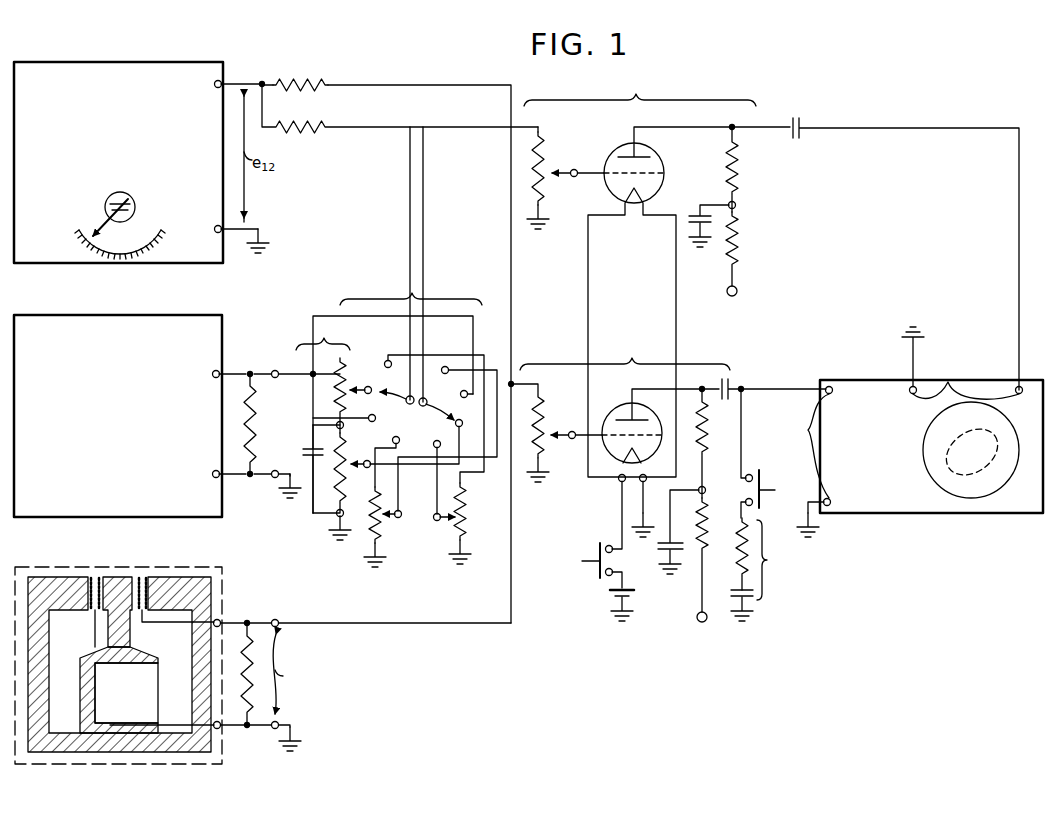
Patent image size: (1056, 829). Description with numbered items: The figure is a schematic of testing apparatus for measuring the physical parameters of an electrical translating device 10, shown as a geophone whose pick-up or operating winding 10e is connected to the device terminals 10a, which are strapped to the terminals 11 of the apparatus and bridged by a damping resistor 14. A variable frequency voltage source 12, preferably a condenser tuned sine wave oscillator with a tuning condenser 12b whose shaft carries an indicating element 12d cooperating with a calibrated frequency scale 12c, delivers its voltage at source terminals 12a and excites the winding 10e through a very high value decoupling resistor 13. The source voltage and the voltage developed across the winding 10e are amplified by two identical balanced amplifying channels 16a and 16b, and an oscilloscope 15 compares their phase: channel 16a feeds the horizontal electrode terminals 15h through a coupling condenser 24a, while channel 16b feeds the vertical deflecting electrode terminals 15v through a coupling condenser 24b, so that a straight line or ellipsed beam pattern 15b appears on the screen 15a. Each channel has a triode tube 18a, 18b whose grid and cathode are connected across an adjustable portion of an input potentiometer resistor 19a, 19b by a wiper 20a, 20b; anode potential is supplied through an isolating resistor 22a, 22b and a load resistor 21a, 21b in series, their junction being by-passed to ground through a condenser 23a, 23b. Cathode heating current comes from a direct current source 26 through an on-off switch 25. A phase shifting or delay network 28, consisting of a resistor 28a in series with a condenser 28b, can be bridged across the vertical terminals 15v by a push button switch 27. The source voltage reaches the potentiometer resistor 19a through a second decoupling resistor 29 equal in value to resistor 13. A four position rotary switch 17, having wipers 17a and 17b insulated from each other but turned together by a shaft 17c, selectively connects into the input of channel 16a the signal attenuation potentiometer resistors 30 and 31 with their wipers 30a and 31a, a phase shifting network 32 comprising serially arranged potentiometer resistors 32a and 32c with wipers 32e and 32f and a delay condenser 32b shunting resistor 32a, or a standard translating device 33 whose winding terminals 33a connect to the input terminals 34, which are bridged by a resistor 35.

The translating device 10 is at (78, 570).
The terminals of the translating device 10a is at (220, 620).
The pick-up or operating winding 10e is at (144, 576).
The terminals of the testing apparatus 11 is at (278, 620).
The variable frequency voltage source 12 is at (58, 66).
The source terminals 12a is at (217, 78).
The tuning condenser 12b is at (132, 202).
The calibrated frequency scale 12c is at (86, 239).
The indicating element 12d is at (88, 218).
The decoupling resistor 13 is at (292, 78).
The damping resistor 14 is at (252, 718).
The oscilloscope 15 is at (878, 386).
The oscilloscope screen 15a is at (926, 434).
The beam pattern 15b is at (946, 456).
The horizontal electrode terminals 15h is at (966, 376).
The vertical deflecting electrode terminals 15v is at (802, 446).
The amplifying channel 16a is at (771, 277).
The amplifying channel 16b is at (668, 495).
The rotary switch 17 is at (405, 320).
The switch wiper 17a is at (403, 390).
The switch wiper 17b is at (450, 405).
The manually operable shaft 17c is at (416, 412).
The thermionic tube 18a is at (658, 166).
The thermionic tube 18b is at (605, 416).
The input potentiometer resistor 19a is at (542, 192).
The input potentiometer resistor 19b is at (555, 468).
The wiper 20a is at (560, 168).
The wiper 20b is at (556, 424).
The load resistor 21a is at (738, 176).
The load resistor 21b is at (708, 444).
The isolating resistor 22a is at (738, 240).
The isolating resistor 22b is at (708, 506).
The condenser 23a is at (692, 216).
The condenser 23b is at (666, 562).
The coupling condenser 24a is at (798, 122).
The coupling condenser 24b is at (736, 385).
The on-off switch 25 is at (588, 548).
The direct current source 26 is at (610, 602).
The push button switch 27 is at (770, 477).
The phase shifting or delay network 28 is at (750, 569).
The resistor 28a is at (740, 540).
The condenser 28b is at (750, 592).
The decoupling resistor 29 is at (316, 124).
The potentiometer resistor 30 is at (462, 518).
The wiper 30a is at (436, 510).
The potentiometer resistor 31 is at (378, 542).
The wiper 31a is at (387, 518).
The phase shifting network 32 is at (322, 431).
The potentiometer resistor 32a is at (324, 438).
The delay condenser 32b is at (309, 452).
The potentiometer resistor 32c is at (334, 380).
The wiper 32e is at (368, 454).
The wiper 32f is at (350, 384).
The standard translating device 33 is at (64, 322).
The winding terminals of the standard device 33a is at (212, 372).
The input terminals 34 is at (270, 370).
The resistor 35 is at (242, 436).